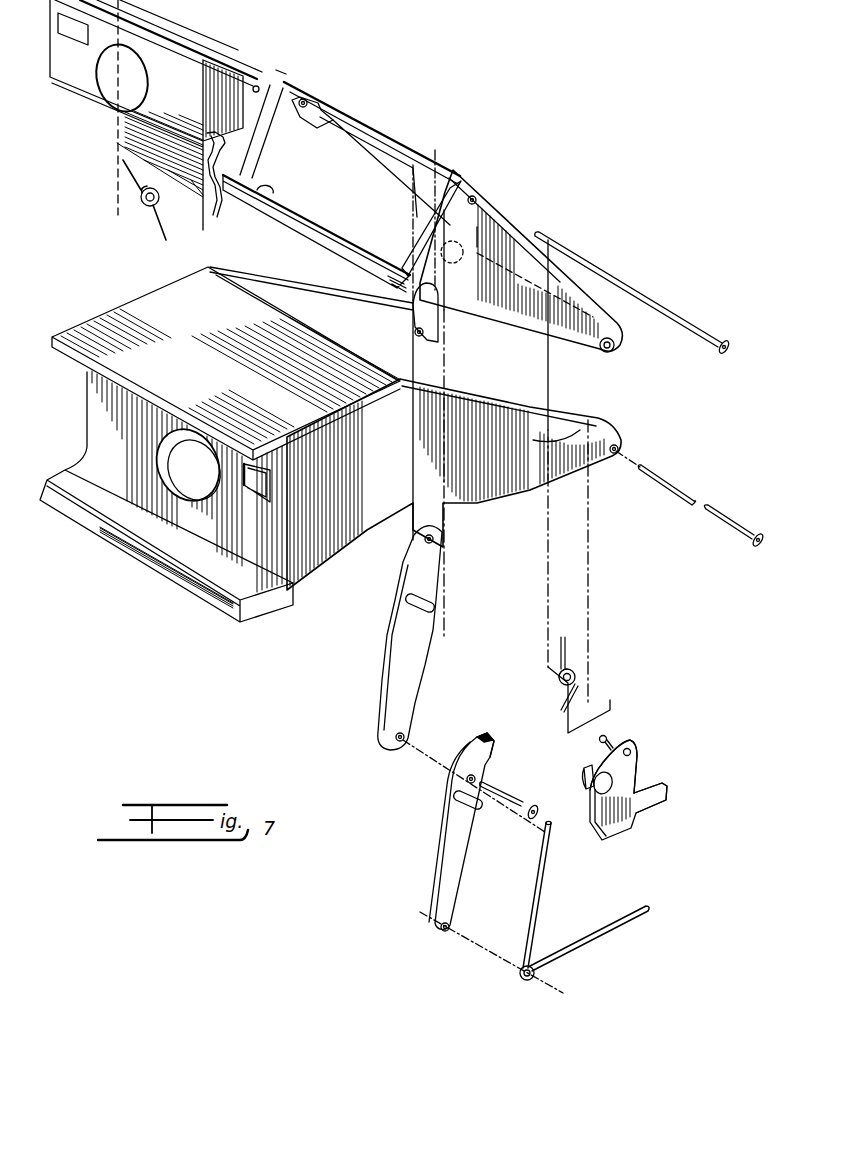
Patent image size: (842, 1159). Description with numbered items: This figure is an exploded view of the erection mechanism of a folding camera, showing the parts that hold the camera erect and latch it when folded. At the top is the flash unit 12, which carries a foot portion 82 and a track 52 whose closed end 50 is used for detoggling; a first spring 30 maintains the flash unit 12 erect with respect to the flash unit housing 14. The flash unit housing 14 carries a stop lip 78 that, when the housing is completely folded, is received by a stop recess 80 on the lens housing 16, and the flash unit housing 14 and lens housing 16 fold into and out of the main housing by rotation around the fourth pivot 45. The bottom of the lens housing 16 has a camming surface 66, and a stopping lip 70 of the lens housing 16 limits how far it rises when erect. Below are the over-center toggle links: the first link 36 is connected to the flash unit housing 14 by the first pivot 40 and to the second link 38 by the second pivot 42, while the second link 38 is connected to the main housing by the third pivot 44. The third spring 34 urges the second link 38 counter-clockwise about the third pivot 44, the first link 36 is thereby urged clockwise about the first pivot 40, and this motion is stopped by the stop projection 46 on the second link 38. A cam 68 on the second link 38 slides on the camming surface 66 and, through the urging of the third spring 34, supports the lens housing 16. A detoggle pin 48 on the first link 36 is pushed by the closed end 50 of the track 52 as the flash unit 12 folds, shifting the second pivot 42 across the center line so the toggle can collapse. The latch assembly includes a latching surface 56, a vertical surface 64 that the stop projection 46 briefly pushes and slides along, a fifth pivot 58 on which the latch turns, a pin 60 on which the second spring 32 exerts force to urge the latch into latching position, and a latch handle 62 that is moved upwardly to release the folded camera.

The flash unit 12 is at (222, 86).
The foot portion 82 is at (254, 87).
The closed end 50 is at (205, 128).
The first spring 30 is at (147, 205).
The track 52 is at (222, 175).
The stop lip 78 is at (430, 167).
The stop recess 80 is at (297, 318).
The flash unit housing 14 is at (535, 297).
The first pivot 40 is at (670, 318).
The lens housing 16 is at (533, 440).
The fourth pivot 45 is at (723, 523).
The camming surface 66 is at (460, 500).
The stopping lip 70 is at (193, 573).
The first link 36 is at (407, 652).
The detoggle pin 48 is at (410, 610).
The second link 38 is at (458, 847).
The stop projection 46 is at (480, 733).
The third pivot 44 is at (450, 933).
The cam 68 is at (472, 807).
The second pivot 42 is at (517, 802).
The third spring 34 is at (523, 983).
The second spring 32 is at (580, 673).
The latching surface 56 is at (603, 833).
The fifth pivot 58 is at (633, 767).
The latch handle 62 is at (648, 807).
The pin 60 is at (630, 753).
The vertical surface 64 is at (590, 803).